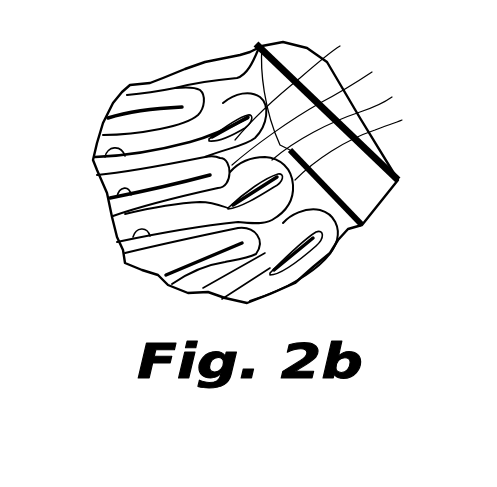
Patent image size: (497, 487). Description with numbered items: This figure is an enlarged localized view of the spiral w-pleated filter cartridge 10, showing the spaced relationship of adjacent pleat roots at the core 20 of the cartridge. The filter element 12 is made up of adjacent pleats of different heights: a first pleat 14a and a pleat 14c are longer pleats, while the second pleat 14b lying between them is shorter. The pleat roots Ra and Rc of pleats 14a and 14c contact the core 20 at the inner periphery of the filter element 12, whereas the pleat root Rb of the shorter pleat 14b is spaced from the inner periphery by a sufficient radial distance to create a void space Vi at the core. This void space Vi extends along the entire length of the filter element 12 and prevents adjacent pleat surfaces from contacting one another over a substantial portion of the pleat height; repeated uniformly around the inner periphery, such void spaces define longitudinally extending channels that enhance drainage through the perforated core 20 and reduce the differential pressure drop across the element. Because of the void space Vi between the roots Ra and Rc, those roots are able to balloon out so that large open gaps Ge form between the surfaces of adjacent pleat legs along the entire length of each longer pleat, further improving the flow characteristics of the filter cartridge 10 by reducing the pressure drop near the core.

The filter cartridge 10 is at (105, 78).
The filter element 12 is at (293, 284).
The first pleat 14a is at (97, 153).
The second pleat 14b is at (110, 197).
The pleat 14c is at (127, 243).
The core 20 is at (371, 205).
The open gap Ge is at (222, 110).
The pleat root Ra is at (304, 84).
The pleat root Rb is at (314, 115).
The void space Vi is at (340, 126).
The pleat root Rc is at (355, 149).